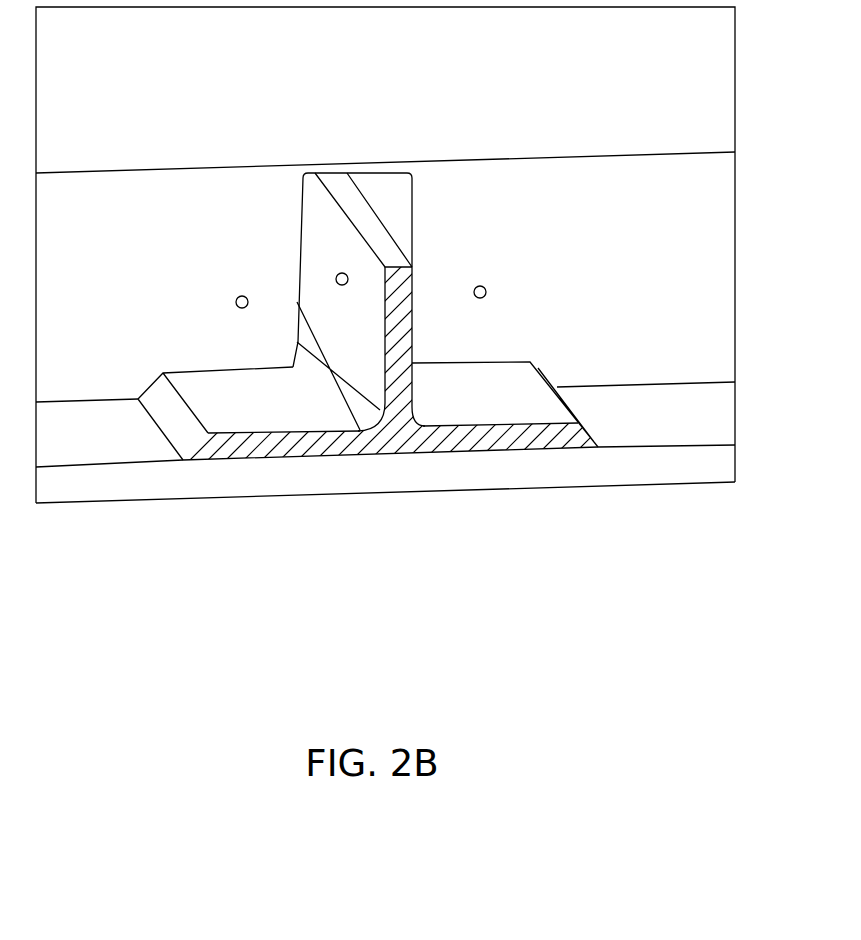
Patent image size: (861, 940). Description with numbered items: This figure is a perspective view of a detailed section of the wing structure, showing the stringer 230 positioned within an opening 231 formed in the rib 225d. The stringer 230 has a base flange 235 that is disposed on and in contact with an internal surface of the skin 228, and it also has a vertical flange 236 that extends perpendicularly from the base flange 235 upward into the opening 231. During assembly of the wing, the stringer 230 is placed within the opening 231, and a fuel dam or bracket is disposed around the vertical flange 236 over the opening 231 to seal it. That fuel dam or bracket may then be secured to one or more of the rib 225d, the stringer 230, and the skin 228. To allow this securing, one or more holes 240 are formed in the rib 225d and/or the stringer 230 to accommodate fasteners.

The rib 225d is at (647, 250).
The skin 228 is at (425, 474).
The stringer 230 is at (255, 462).
The opening 231 is at (301, 194).
The base flange 235 is at (550, 435).
The vertical flange 236 is at (383, 337).
The holes 240 is at (247, 295).